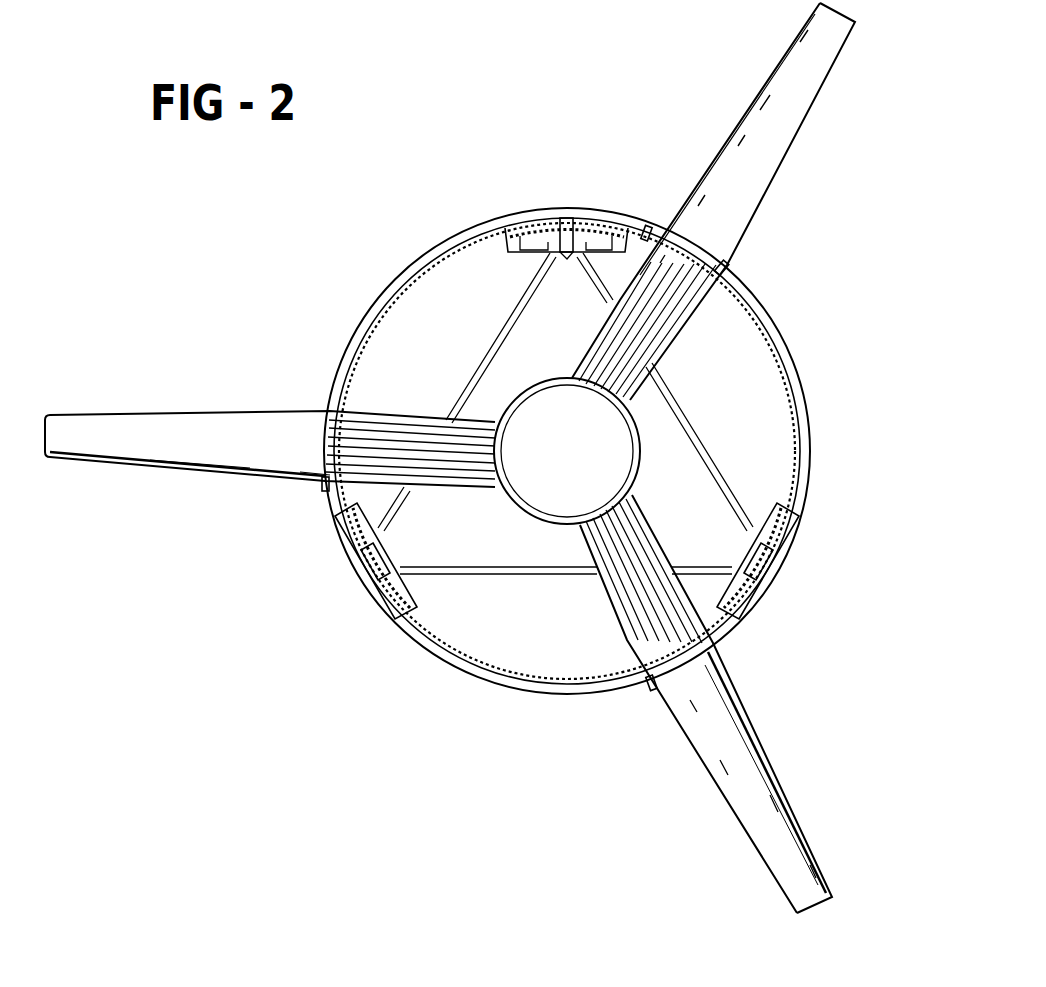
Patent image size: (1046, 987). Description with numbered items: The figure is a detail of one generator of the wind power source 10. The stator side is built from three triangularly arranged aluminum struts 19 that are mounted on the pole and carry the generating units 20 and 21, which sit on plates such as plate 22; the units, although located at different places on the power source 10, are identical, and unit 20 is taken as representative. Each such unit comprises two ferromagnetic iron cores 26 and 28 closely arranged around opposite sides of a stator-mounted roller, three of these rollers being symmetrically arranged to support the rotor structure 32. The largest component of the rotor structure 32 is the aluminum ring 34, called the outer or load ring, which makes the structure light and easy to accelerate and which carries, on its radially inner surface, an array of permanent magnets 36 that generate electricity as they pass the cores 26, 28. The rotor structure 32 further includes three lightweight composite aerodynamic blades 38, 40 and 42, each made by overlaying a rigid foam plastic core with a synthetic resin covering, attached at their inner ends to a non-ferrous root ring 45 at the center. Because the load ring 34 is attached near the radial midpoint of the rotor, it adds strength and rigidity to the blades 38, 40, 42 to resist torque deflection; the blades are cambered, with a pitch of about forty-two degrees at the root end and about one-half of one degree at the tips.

The source 10 is at (608, 448).
The aluminum struts 19 is at (490, 318).
The generating unit 20 is at (331, 585).
The generating unit 21 is at (775, 505).
The plate 22 is at (495, 245).
The ferromagnetic iron core 26 is at (322, 487).
The ferromagnetic iron core 28 is at (370, 585).
The rotor structure 32 is at (779, 316).
The aluminum ring 34 is at (805, 388).
The permanent magnets 36 is at (792, 420).
The aerodynamic blade 38 is at (780, 152).
The aerodynamic blade 40 is at (162, 412).
The aerodynamic blade 42 is at (778, 792).
The root ring 45 is at (640, 460).